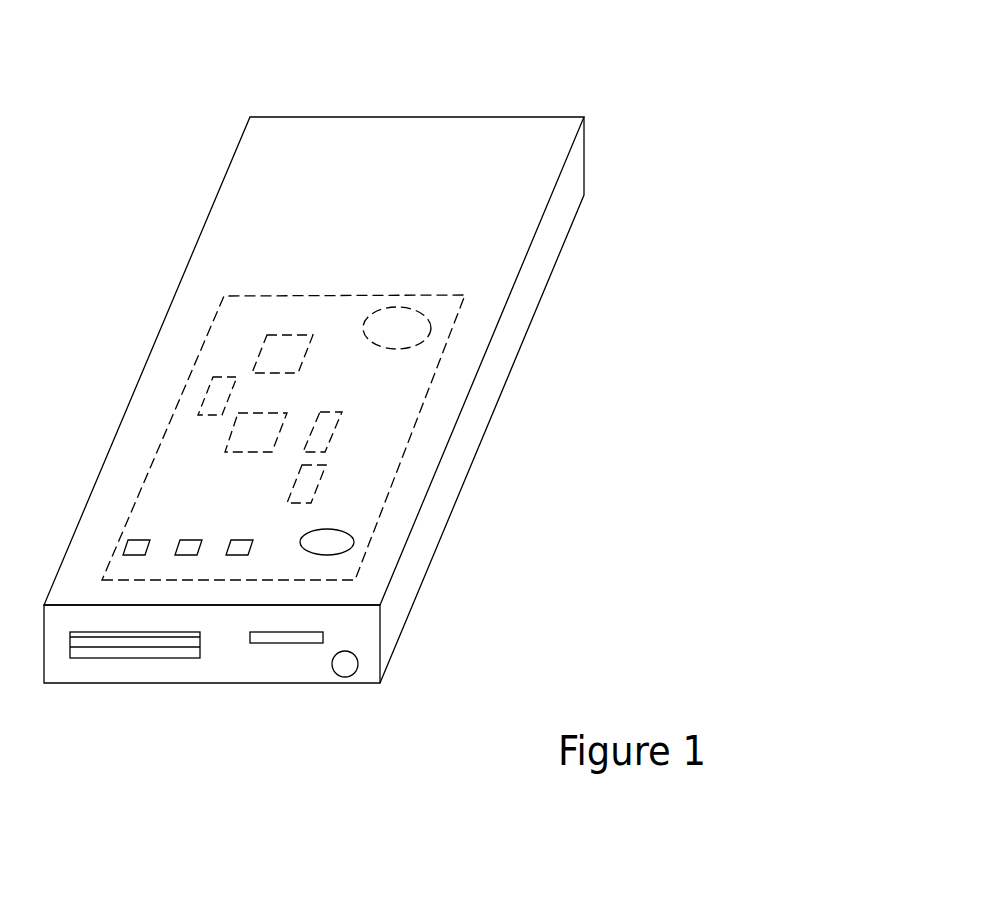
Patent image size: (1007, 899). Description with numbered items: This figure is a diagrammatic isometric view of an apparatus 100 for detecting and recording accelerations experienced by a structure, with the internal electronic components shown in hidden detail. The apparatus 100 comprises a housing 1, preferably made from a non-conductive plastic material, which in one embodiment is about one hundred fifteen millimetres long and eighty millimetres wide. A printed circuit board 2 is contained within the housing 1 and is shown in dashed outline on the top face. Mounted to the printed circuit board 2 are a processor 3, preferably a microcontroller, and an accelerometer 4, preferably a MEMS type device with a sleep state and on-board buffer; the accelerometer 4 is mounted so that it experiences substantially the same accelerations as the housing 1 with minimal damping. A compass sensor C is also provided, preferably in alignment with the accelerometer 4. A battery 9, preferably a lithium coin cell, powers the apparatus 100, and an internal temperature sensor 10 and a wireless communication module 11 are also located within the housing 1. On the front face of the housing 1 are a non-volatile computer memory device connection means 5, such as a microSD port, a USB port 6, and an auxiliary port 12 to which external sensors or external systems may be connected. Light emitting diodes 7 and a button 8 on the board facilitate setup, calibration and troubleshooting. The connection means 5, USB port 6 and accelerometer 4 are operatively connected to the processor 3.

The apparatus for detecting and recording accelerations 100 is at (535, 87).
The housing 1 is at (517, 143).
The printed circuit board 2 is at (395, 400).
The processor 3 is at (257, 437).
The accelerometer 4 is at (340, 420).
The non-volatile computer memory device connection means 5 is at (285, 643).
The USB port 6 is at (137, 648).
The light emitting diodes 7 is at (243, 540).
The button 8 is at (333, 548).
The battery 9 is at (410, 328).
The internal temperature sensor 10 is at (320, 485).
The wireless communication module 11 is at (277, 348).
The auxiliary port 12 is at (350, 667).
The compass sensor C is at (220, 393).